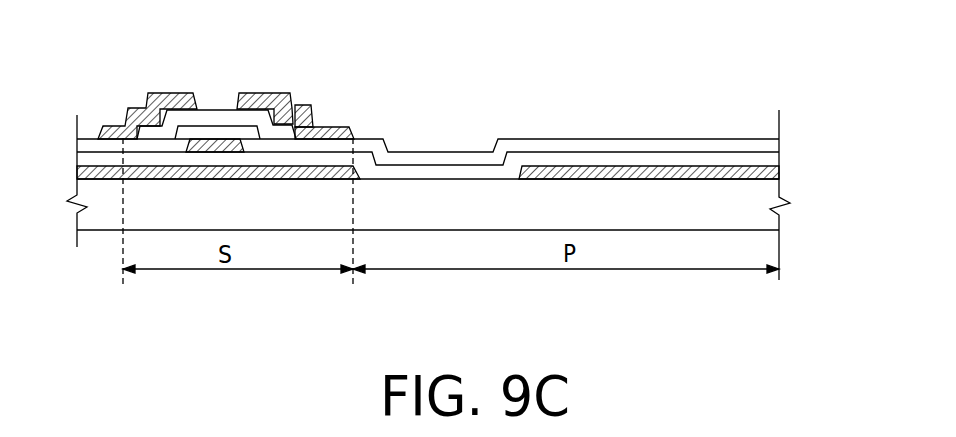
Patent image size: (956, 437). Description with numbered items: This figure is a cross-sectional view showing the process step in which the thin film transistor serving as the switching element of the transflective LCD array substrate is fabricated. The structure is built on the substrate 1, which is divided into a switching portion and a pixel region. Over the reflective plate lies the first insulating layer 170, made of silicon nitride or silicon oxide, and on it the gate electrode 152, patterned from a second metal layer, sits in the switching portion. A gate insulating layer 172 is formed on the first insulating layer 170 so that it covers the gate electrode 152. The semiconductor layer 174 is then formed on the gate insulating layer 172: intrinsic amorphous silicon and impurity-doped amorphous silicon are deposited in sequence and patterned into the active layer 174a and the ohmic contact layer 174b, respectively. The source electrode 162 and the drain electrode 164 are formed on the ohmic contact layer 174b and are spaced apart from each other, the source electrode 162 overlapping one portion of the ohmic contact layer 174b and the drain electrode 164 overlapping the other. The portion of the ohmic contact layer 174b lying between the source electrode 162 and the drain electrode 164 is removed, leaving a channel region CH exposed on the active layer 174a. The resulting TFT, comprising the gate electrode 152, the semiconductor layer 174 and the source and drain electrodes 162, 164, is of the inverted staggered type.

The substrate 1 is at (388, 212).
The gate electrode 152 is at (227, 142).
The source electrode 162 is at (170, 96).
The drain electrode 164 is at (258, 100).
The channel region CH is at (220, 103).
The first insulating layer 170 is at (427, 173).
The gate insulating layer 172 is at (465, 158).
The semiconductor layer 174 is at (331, 69).
The active layer 174a is at (289, 134).
The ohmic contact layer 174b is at (289, 103).